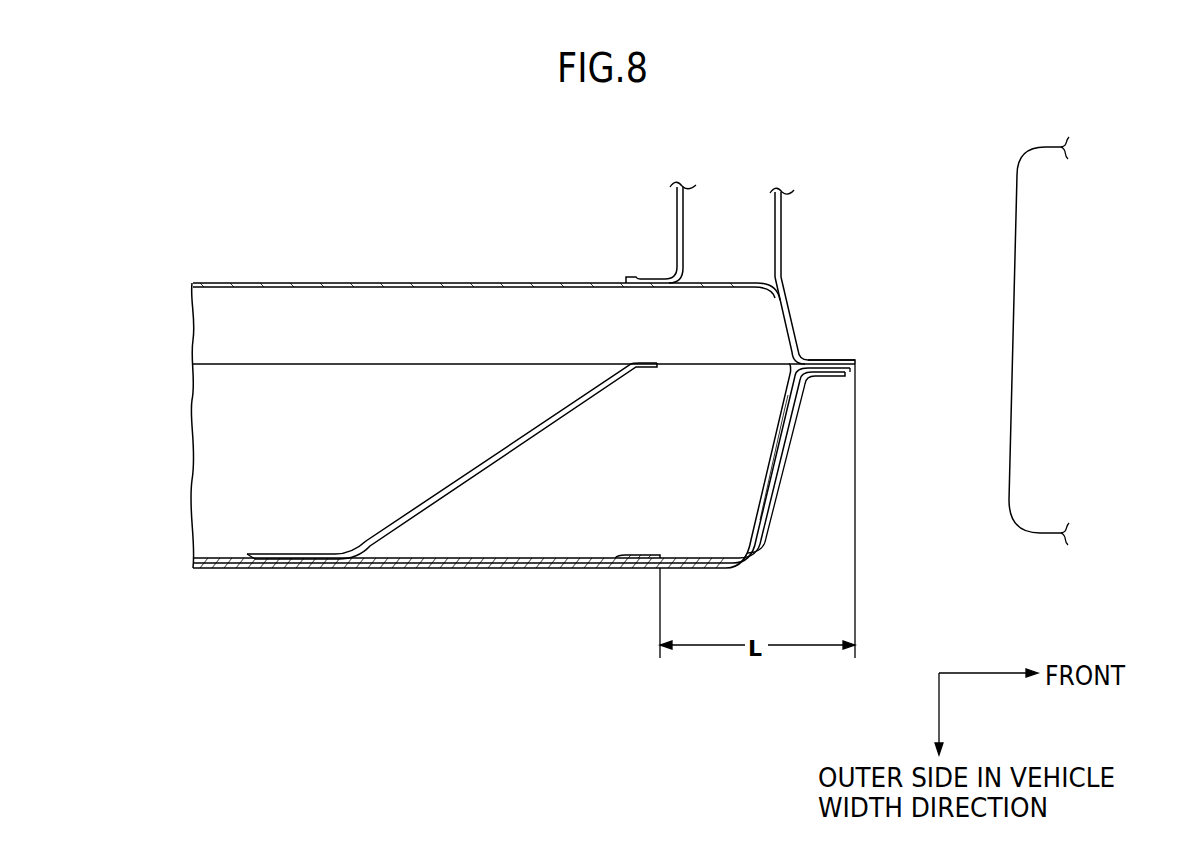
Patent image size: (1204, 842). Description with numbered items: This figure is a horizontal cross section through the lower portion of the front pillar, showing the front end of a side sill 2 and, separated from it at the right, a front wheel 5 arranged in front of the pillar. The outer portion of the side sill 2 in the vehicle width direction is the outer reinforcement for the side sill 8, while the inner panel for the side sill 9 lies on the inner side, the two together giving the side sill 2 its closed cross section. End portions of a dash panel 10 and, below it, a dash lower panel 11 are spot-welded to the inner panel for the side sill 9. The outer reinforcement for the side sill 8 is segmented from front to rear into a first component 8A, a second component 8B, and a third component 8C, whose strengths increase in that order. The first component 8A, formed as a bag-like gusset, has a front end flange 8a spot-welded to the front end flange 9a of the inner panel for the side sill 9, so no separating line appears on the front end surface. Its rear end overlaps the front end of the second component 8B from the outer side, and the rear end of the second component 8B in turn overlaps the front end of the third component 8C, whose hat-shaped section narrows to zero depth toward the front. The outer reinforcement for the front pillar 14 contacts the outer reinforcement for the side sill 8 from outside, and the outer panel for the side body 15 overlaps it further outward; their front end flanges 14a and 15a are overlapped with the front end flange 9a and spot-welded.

The side sill 2 is at (455, 569).
The front wheel 5 is at (1005, 484).
The outer reinforcement for the side sill 8 is at (207, 566).
The first component 8A is at (762, 497).
The second component 8B is at (572, 558).
The third component 8C is at (470, 480).
The front end flange 8a is at (847, 362).
The inner panel for the side sill 9 is at (514, 283).
The front end flange 9a is at (824, 361).
The dash panel 10 is at (676, 230).
The dash lower panel 11 is at (784, 243).
The outer reinforcement for the front pillar 14 is at (643, 565).
The front end flange 14a is at (834, 375).
The outer panel for the side body 15 is at (766, 545).
The front end flange 15a is at (841, 372).